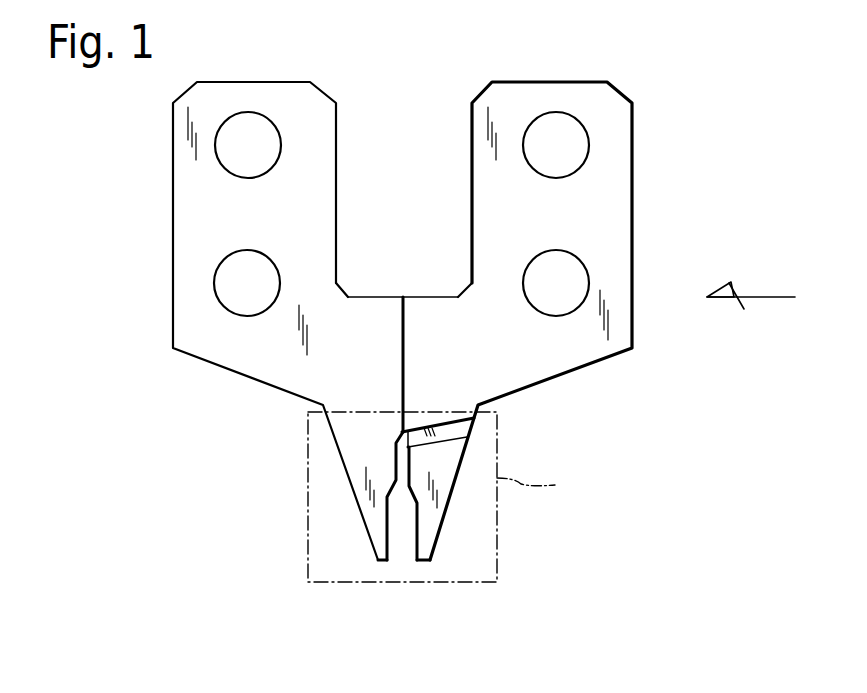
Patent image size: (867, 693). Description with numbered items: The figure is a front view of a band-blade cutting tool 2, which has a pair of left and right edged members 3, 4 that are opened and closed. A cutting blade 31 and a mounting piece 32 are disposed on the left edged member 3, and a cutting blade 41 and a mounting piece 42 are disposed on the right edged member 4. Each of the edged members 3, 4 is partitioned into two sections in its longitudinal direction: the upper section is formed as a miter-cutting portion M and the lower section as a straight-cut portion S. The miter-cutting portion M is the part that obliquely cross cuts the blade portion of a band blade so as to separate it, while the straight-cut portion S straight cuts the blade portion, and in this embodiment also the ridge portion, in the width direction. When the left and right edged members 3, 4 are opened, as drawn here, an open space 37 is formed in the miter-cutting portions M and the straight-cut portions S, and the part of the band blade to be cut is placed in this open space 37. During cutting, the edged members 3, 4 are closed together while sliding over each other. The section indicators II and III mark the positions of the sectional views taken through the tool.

The band-blade cutting tool 2 is at (647, 171).
The left edged member 3 is at (173, 320).
The mounting piece 32 is at (173, 210).
The cutting blade 31 is at (346, 472).
The right edged member 4 is at (630, 323).
The mounting piece 42 is at (625, 218).
The cutting blade 41 is at (450, 497).
The open space 37 is at (410, 520).
The straight-cut portion S is at (405, 548).
The miter-cutting portion M is at (388, 467).
The section line II is at (751, 287).
The section line III is at (542, 487).